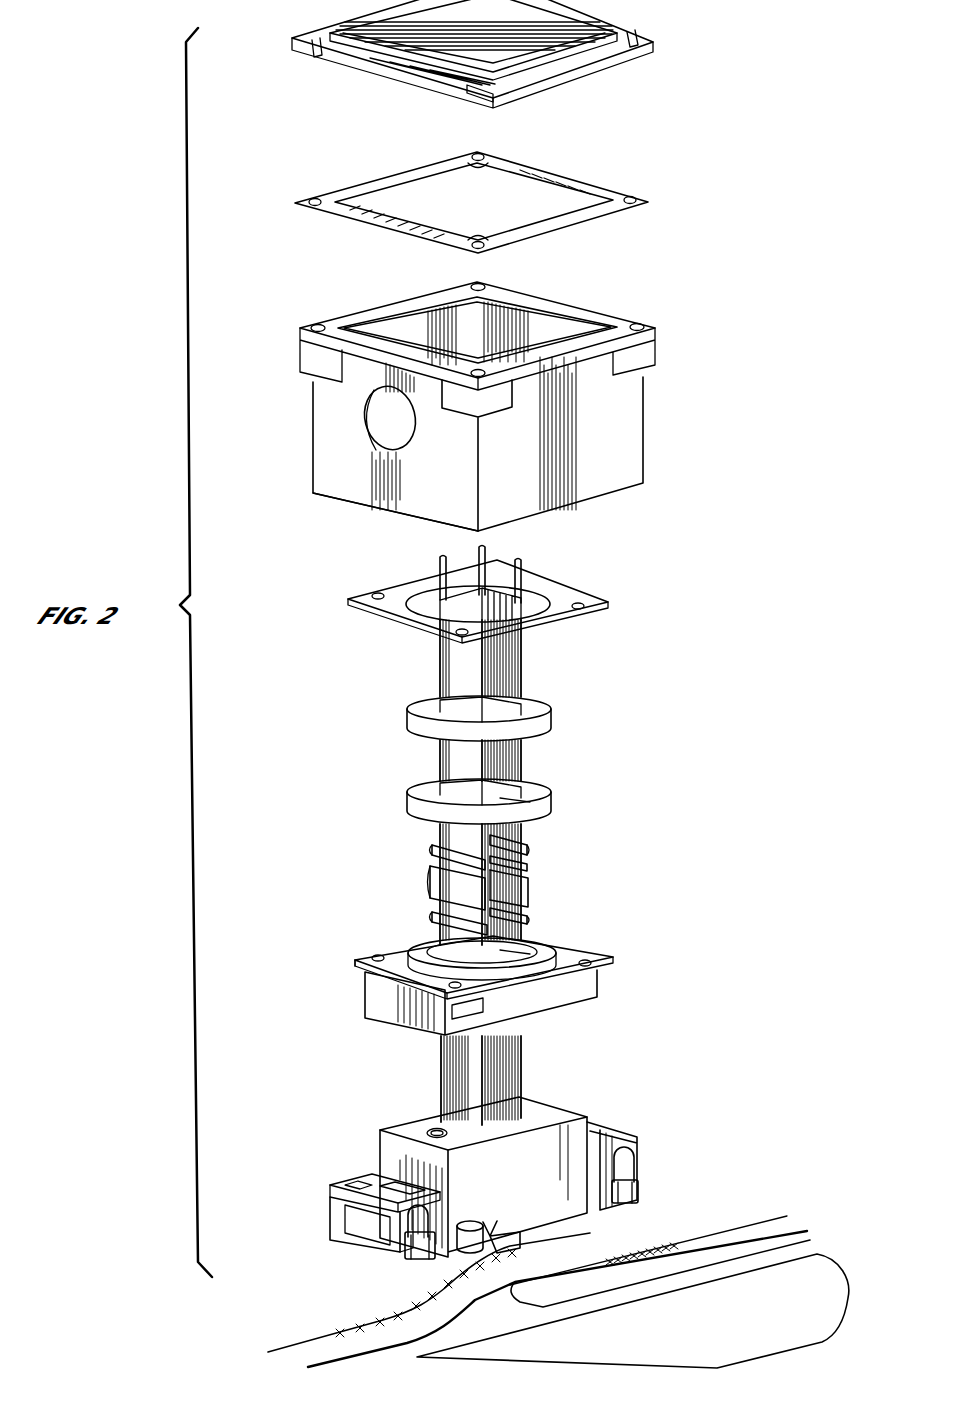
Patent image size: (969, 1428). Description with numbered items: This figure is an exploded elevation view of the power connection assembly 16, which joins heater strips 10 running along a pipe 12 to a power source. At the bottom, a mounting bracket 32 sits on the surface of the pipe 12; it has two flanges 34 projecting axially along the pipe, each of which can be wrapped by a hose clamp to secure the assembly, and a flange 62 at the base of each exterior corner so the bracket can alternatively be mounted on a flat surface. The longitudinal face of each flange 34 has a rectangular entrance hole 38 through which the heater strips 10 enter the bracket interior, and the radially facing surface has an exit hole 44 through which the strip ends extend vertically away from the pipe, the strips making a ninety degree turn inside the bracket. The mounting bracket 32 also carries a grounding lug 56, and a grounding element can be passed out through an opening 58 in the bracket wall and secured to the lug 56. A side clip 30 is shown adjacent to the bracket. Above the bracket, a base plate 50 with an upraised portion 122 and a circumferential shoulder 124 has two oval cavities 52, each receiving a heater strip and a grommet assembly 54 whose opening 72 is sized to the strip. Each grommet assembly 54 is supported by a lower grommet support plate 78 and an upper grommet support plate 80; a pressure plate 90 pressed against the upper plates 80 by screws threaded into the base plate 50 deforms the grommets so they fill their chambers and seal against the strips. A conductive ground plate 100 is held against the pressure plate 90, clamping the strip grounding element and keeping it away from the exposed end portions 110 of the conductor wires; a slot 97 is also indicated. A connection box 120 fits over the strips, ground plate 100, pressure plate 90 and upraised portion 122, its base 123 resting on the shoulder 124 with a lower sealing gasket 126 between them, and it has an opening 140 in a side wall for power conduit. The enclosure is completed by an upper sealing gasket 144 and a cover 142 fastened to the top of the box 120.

The heater strips 10 is at (300, 1338).
The pipe 12 is at (812, 1252).
The power connection assembly 16 is at (290, 566).
The mounting clip 30 is at (330, 1188).
The mounting bracket 32 is at (587, 1117).
The flanges 34 is at (365, 1178).
The entrance hole 38 is at (373, 1227).
The exit hole 44 is at (525, 1110).
The base plate 50 is at (613, 958).
The cavities 52 is at (500, 963).
The grommet assembly 54 is at (430, 883).
The grounding lug 56 is at (473, 1223).
The opening 58 is at (492, 1220).
The flange 62 is at (400, 1257).
The opening 72 is at (533, 862).
The lower grommet support plate 78 is at (432, 917).
The upper grommet support plate 80 is at (432, 851).
The pressure plate 90 is at (552, 800).
The disc slot 97 is at (530, 803).
The ground plate 100 is at (552, 718).
The end portions of conductor wires 110 is at (523, 560).
The connection box 120 is at (632, 398).
The upraised portion 122 is at (537, 943).
The base 123 is at (388, 512).
The circumferential shoulder 124 is at (363, 957).
The lower sealing gasket 126 is at (585, 603).
The opening 140 is at (367, 425).
The cover 142 is at (348, 68).
The upper sealing gasket 144 is at (338, 220).